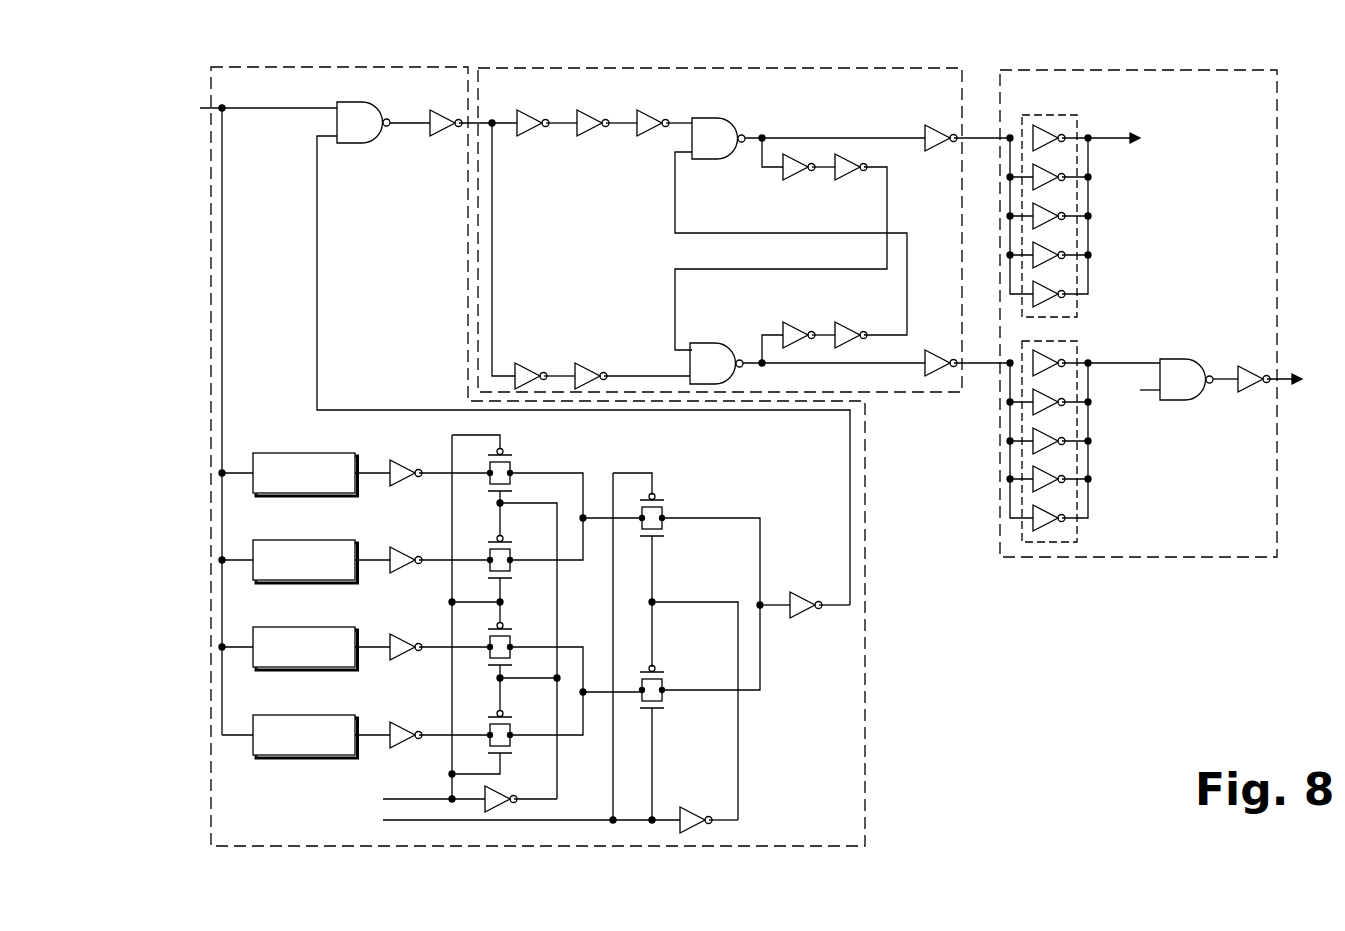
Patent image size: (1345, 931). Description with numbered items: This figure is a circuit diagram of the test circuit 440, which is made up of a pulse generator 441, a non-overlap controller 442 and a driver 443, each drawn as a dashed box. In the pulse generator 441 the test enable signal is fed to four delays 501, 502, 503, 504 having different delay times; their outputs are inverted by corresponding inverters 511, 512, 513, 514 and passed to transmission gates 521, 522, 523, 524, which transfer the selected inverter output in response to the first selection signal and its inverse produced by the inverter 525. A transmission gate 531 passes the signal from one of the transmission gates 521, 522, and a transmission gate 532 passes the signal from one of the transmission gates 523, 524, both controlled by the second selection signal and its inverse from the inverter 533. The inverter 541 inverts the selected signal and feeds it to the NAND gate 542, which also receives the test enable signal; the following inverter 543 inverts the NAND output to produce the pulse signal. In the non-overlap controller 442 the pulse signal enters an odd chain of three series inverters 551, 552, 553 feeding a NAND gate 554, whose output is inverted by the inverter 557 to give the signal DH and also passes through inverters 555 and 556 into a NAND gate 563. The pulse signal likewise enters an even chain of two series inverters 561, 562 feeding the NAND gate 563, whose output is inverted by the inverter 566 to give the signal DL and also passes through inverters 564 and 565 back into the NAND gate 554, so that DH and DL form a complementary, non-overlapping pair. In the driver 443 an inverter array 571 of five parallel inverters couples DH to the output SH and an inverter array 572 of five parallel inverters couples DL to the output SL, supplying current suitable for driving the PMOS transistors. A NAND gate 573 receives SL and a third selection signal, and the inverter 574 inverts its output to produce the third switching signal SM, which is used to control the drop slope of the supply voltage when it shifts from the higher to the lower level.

The test circuit 440 is at (1126, 696).
The pulse generator 441 is at (865, 748).
The non-overlap controller 442 is at (925, 396).
The driver 443 is at (1197, 558).
The delay 501 is at (348, 453).
The delay 502 is at (348, 540).
The delay 503 is at (348, 627).
The delay 504 is at (348, 715).
The inverter 511 is at (416, 449).
The inverter 512 is at (416, 536).
The inverter 513 is at (416, 623).
The inverter 514 is at (416, 711).
The transmission gate 521 is at (512, 468).
The transmission gate 522 is at (512, 555).
The transmission gate 523 is at (512, 642).
The transmission gate 524 is at (512, 730).
The inverter 525 is at (508, 797).
The transmission gate 531 is at (664, 510).
The transmission gate 532 is at (664, 682).
The inverter 533 is at (690, 818).
The inverter 541 is at (805, 600).
The NAND gate 542 is at (363, 144).
The inverter 543 is at (444, 137).
The inverter 551 is at (546, 99).
The inverter 552 is at (606, 99).
The inverter 553 is at (666, 99).
The NAND gate 554 is at (712, 117).
The inverter 555 is at (798, 181).
The inverter 556 is at (850, 181).
The inverter 557 is at (938, 126).
The inverter 561 is at (545, 352).
The inverter 562 is at (605, 352).
The NAND gate 563 is at (710, 343).
The inverter 564 is at (796, 322).
The inverter 565 is at (850, 322).
The inverter 566 is at (937, 350).
The inverter array 571 is at (1077, 305).
The inverter array 572 is at (1077, 530).
The NAND gate 573 is at (1177, 359).
The inverter 574 is at (1247, 366).